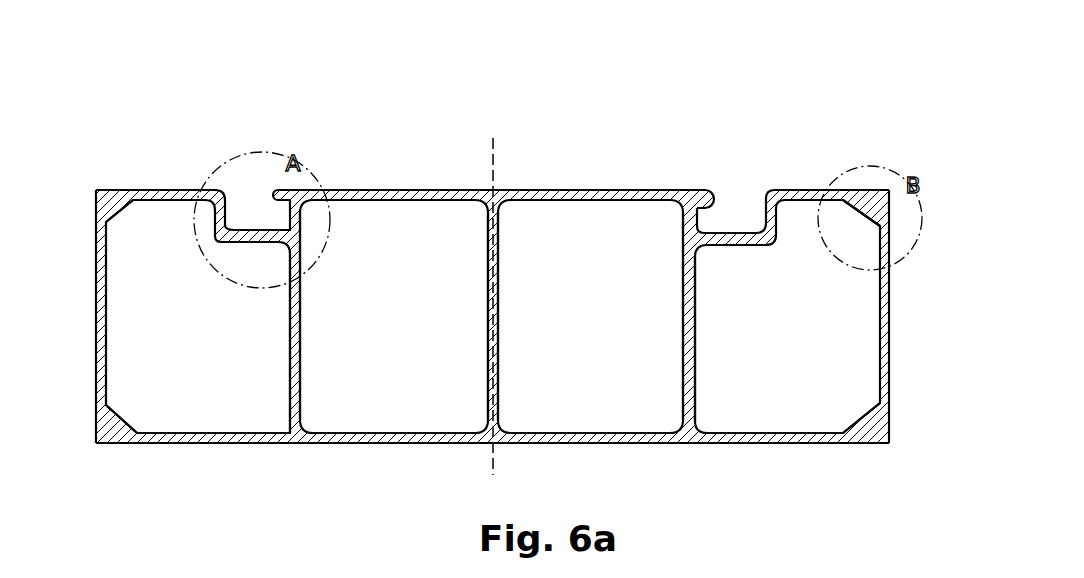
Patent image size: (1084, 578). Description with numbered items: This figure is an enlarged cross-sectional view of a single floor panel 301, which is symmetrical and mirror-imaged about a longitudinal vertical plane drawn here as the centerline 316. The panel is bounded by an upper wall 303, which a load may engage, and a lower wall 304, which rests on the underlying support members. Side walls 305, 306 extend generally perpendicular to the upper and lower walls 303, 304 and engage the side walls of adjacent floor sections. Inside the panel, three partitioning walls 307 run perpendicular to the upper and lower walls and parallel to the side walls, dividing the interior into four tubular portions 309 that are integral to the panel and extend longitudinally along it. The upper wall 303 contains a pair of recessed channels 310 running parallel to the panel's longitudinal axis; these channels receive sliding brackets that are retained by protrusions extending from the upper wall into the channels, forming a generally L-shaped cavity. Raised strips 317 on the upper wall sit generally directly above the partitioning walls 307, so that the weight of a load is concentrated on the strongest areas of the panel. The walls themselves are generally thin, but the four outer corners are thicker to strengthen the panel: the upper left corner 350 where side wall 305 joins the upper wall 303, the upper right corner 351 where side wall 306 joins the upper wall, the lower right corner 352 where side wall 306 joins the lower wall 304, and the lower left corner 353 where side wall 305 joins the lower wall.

The floor panel 301 is at (750, 121).
The upper wall 303 is at (380, 190).
The lower wall 304 is at (314, 445).
The side wall 305 is at (98, 356).
The side wall 306 is at (889, 332).
The partitioning walls 307 is at (299, 332).
The tubular portions 309 is at (176, 322).
The recessed channels 310 is at (247, 205).
The centerline 316 is at (488, 295).
The raised strips 317 is at (293, 192).
The upper left corner 350 is at (107, 208).
The upper right corner 351 is at (878, 200).
The lower right corner 352 is at (878, 433).
The lower left corner 353 is at (107, 428).